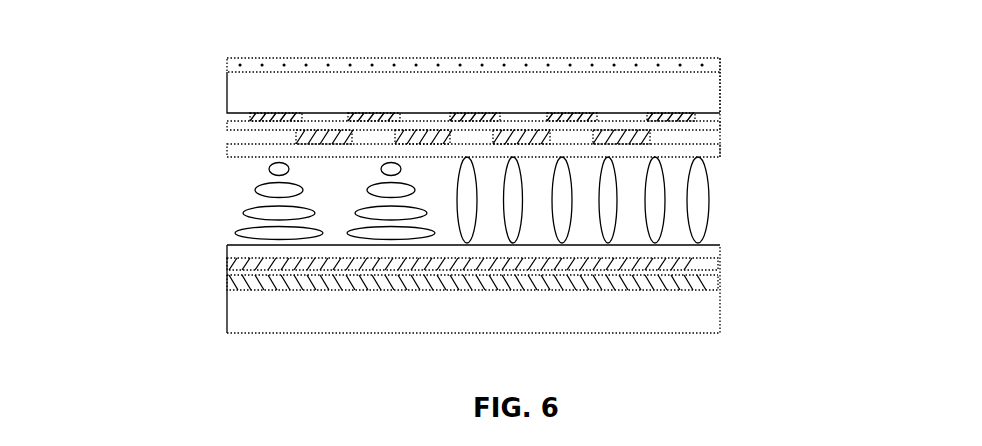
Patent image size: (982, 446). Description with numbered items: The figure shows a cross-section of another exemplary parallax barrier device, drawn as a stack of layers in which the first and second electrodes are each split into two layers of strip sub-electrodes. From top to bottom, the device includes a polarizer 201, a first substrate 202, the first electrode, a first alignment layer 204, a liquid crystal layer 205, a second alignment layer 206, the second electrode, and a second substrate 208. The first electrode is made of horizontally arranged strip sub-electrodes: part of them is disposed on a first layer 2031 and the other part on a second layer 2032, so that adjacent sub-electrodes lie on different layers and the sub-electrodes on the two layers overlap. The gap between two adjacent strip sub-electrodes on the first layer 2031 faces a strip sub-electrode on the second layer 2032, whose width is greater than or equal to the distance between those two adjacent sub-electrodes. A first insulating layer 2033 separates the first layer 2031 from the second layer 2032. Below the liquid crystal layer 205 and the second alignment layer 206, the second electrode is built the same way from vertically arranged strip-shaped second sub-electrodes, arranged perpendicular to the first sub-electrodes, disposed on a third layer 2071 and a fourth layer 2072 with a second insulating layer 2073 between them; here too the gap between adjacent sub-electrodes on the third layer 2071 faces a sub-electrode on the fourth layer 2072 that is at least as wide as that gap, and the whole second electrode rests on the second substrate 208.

The polarizer 201 is at (720, 58).
The first substrate 202 is at (227, 83).
The first layer 2031 is at (695, 118).
The second layer 2032 is at (227, 138).
The first insulating layer 2033 is at (227, 128).
The first alignment layer 204 is at (720, 156).
The liquid crystal layer 205 is at (710, 192).
The second alignment layer 206 is at (720, 245).
The third layer 2071 is at (227, 262).
The fourth layer 2072 is at (720, 286).
The second insulating layer 2073 is at (720, 275).
The second substrate 208 is at (227, 317).